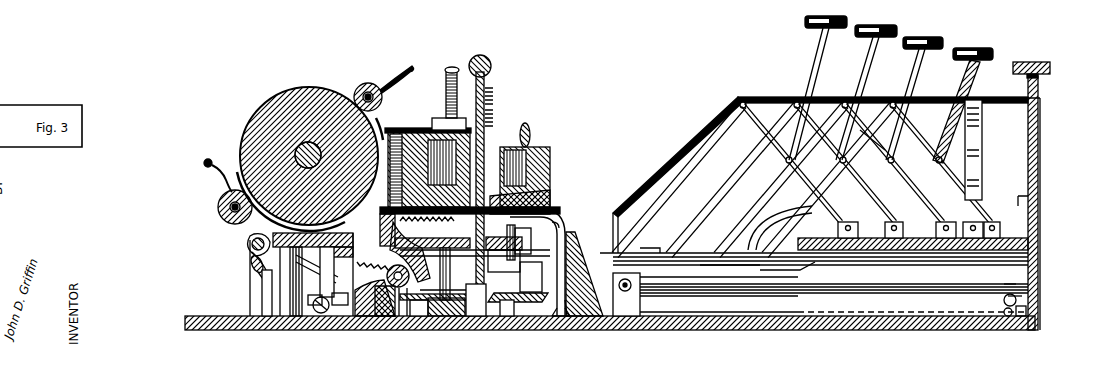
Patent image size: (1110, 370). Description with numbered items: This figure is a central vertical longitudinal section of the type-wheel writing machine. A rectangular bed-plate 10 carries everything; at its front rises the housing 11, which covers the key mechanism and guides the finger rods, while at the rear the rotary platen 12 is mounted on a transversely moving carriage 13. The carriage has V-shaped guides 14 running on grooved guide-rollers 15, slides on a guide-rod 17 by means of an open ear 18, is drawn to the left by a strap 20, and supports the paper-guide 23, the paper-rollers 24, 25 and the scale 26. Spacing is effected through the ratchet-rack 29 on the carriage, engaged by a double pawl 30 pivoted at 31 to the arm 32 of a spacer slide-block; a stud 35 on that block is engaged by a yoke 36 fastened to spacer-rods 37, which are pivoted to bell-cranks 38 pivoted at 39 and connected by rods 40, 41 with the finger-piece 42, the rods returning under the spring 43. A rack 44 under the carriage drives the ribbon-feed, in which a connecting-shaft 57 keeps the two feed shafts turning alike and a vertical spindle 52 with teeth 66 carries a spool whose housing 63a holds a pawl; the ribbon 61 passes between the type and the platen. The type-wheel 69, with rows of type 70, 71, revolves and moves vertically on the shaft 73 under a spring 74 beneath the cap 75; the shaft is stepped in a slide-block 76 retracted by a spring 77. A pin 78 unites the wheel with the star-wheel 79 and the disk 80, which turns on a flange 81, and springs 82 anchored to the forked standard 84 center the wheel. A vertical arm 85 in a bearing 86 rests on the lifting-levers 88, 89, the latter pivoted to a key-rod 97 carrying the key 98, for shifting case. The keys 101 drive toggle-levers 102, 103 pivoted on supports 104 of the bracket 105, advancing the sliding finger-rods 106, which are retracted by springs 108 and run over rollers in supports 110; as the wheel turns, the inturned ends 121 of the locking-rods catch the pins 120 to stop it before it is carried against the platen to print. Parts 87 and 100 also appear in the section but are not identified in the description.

The bed-plate 10 is at (968, 330).
The housing 11 is at (784, 96).
The rotary platen 12 is at (335, 90).
The carriage 13 is at (340, 236).
The V-shaped guides 14 is at (252, 265).
The grooved guide-rollers 15 is at (264, 288).
The guide-rod 17 is at (250, 253).
The ear 18 is at (248, 240).
The strap 20 is at (256, 276).
The paper-guide 23 is at (210, 158).
The paper-roller 24 is at (222, 197).
The paper-roller 25 is at (374, 84).
The scale 26 is at (380, 126).
The ratchet-rack 29 is at (303, 276).
The double pawl 30 is at (314, 306).
The pivot 31 is at (322, 308).
The arm 32 is at (348, 306).
The stud 35 is at (400, 316).
The yoke 36 is at (409, 316).
The spacer-rods 37 is at (668, 316).
The bell-cranks 38 is at (1028, 308).
The pivot 39 is at (1008, 294).
The rod 40 is at (1022, 208).
The rod 41 is at (1027, 135).
The finger-piece 42 is at (1036, 58).
The spring 43 is at (367, 258).
The rack 44 is at (354, 252).
The vertical spindle 52 is at (456, 64).
The connecting-shaft 57 is at (395, 287).
The ribbon 61 is at (392, 190).
The housing 63a is at (440, 118).
The teeth 66 is at (446, 86).
The type-wheel 69 is at (540, 147).
The type 70 is at (400, 142).
The type 71 is at (416, 142).
The spindle or shaft 73 is at (492, 114).
The spring 74 is at (492, 94).
The cap 75 is at (490, 62).
The slide-block 76 is at (480, 316).
The spring 77 is at (516, 302).
The pin 78 is at (545, 200).
The star-wheel 79 is at (516, 236).
The disk 80 is at (494, 252).
The flange 81 is at (452, 250).
The springs 82 is at (408, 254).
The forked standard 84 is at (436, 300).
The vertical arm 85 is at (566, 236).
The bearing 86 is at (578, 254).
The pipe 87 is at (522, 219).
The lifting-lever 88 is at (556, 318).
The second lifting-lever 89 is at (568, 318).
The key-rod 97 is at (772, 200).
The finger rod or key 98 is at (982, 118).
The key levers 100 is at (984, 200).
The finger rods or keys 101 is at (812, 75).
The toggle-levers 102 is at (925, 178).
The second toggle-levers 103 is at (720, 176).
The supports 104 is at (871, 135).
The bracket 105 is at (1030, 240).
The sliding finger-rods 106 is at (706, 290).
The springs 108 is at (794, 296).
The supports 110 is at (640, 288).
The pins 120 is at (470, 304).
The inturned ends 121 is at (496, 304).